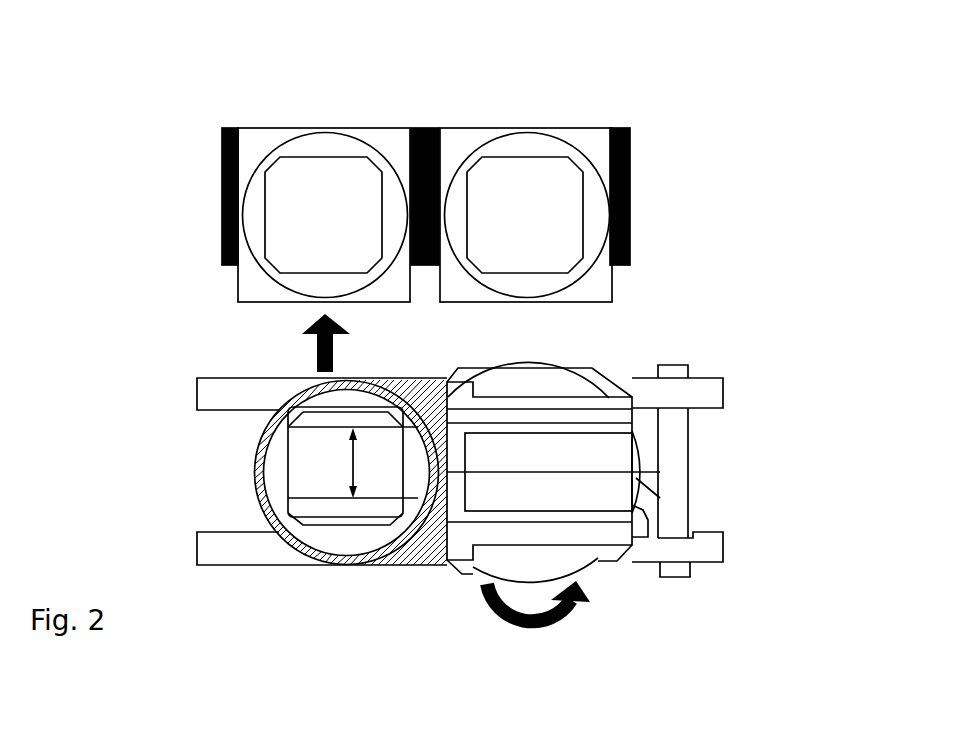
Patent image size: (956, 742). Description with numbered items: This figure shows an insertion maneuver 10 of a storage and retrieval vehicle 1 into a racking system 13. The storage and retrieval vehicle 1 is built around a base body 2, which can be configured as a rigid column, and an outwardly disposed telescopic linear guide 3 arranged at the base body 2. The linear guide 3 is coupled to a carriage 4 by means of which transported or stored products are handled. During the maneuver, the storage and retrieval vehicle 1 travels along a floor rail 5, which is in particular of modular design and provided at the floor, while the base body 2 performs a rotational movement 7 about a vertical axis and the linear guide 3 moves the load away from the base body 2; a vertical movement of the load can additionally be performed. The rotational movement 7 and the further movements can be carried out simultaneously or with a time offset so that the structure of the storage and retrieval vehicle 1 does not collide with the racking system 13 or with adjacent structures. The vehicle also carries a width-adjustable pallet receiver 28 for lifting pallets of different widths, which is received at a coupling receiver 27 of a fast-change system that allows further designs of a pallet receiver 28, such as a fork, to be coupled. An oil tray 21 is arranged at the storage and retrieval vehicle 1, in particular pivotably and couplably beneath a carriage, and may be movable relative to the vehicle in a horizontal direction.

The storage and retrieval vehicle 1 is at (560, 370).
The base body 2 is at (547, 455).
The telescopic linear guide 3 is at (597, 513).
The carriage 4 is at (263, 142).
The floor rail 5 is at (235, 395).
The rotational movement 7 is at (487, 605).
The insertion maneuver 10 is at (309, 343).
The racking system 13 is at (630, 155).
The oil tray 21 is at (433, 378).
The coupling receiver 27 is at (640, 471).
The pallet receiver 28 is at (276, 420).